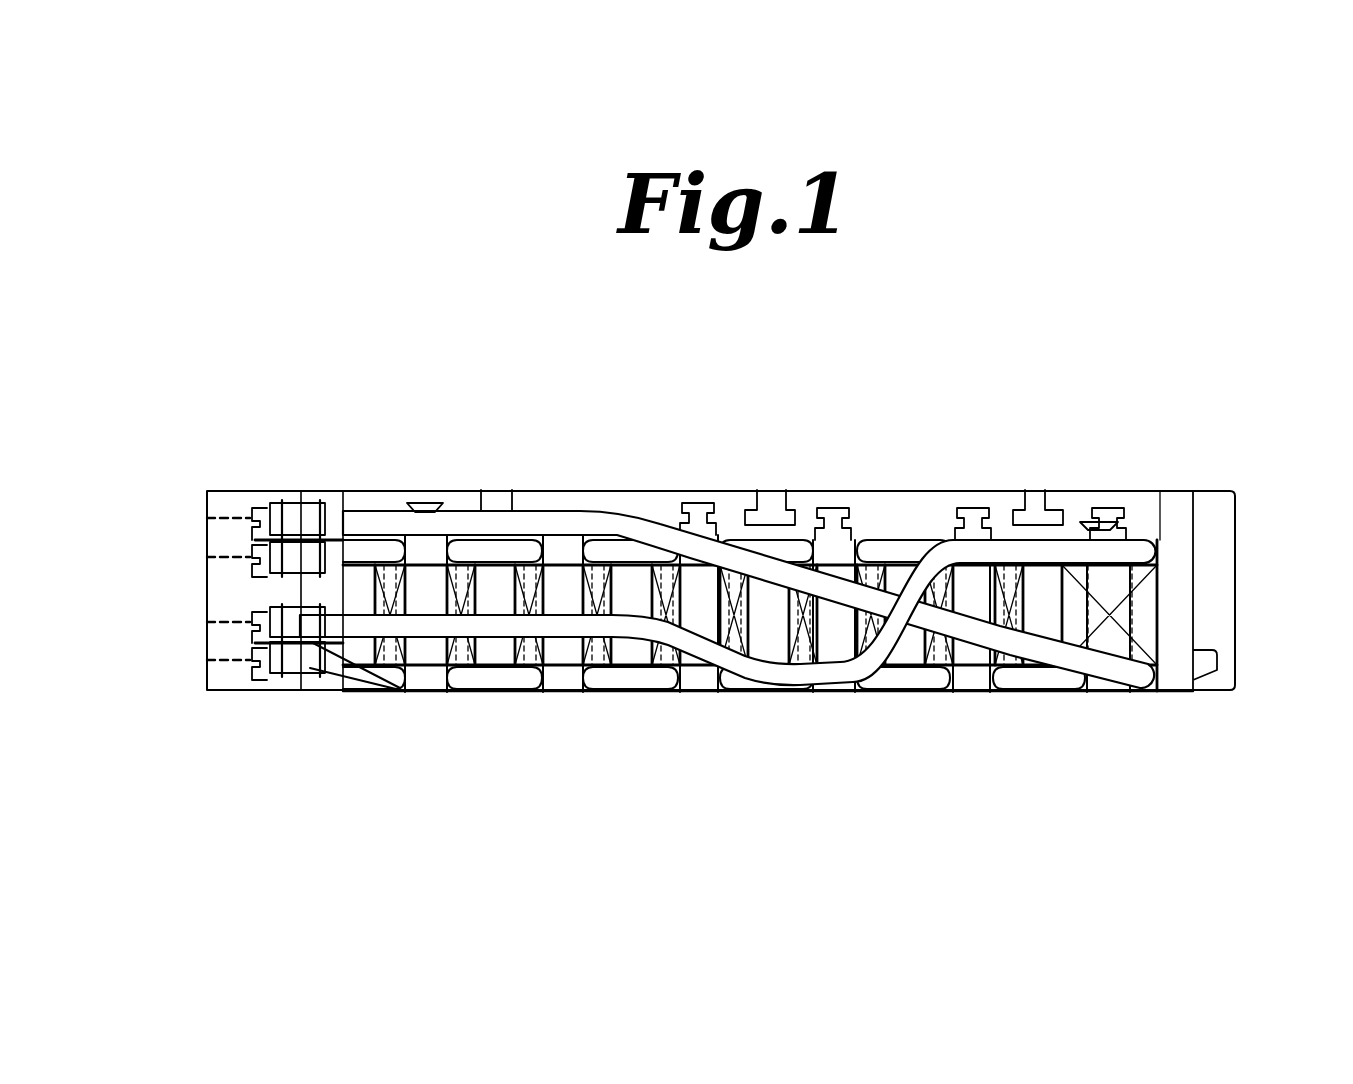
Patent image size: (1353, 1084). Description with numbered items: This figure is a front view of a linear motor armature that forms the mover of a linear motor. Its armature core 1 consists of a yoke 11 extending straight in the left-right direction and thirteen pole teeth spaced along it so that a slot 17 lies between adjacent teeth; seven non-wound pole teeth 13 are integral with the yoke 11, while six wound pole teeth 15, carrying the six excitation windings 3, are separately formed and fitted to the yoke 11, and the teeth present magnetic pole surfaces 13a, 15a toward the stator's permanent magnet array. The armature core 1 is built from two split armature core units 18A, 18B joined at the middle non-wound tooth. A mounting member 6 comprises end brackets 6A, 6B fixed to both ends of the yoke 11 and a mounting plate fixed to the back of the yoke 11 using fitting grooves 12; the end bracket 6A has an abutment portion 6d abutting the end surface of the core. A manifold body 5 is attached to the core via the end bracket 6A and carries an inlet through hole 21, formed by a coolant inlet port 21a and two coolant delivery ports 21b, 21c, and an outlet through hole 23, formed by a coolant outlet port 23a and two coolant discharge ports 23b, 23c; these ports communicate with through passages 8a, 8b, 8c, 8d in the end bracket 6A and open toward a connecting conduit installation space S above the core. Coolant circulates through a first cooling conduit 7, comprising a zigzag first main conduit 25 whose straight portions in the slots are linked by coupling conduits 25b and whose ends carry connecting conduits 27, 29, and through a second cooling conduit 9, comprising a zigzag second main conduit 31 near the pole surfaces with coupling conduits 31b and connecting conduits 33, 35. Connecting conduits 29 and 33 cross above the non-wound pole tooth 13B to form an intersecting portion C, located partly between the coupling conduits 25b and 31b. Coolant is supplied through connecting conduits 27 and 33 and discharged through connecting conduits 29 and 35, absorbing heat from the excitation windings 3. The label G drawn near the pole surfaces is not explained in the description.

The armature core 1 is at (412, 476).
The excitation winding 3 is at (1142, 653).
The manifold body 5 is at (195, 479).
The mounting member 6 is at (1255, 569).
The end bracket 6A is at (322, 498).
The end bracket 6B is at (1232, 525).
The abutment portion 6d is at (348, 525).
The first cooling conduit 7 is at (1176, 530).
The through passage 8a is at (310, 538).
The through passage 8b is at (280, 505).
The through passage 8c is at (273, 608).
The through passage 8d is at (300, 692).
The second cooling conduit 9 is at (1153, 701).
The yoke 11 is at (898, 545).
The fitting groove 12 is at (512, 497).
The non-wound pole tooth 13 is at (360, 597).
The non-wound pole tooth 13B is at (897, 590).
The magnetic pole surface 13a is at (375, 697).
The wound pole tooth 15 is at (430, 590).
The magnetic pole surface 15a is at (420, 693).
The slot 17 is at (1158, 628).
The split armature core unit 18A is at (465, 474).
The split armature core unit 18B is at (1117, 475).
The inlet through hole 21 is at (207, 521).
The coolant inlet port 21a is at (207, 558).
The coolant delivery port 21b is at (268, 508).
The coolant delivery port 21c is at (253, 535).
The outlet through hole 23 is at (207, 661).
The coolant outlet port 23a is at (207, 623).
The coolant discharge port 23b is at (265, 630).
The coolant discharge port 23c is at (268, 672).
The first main conduit 25 is at (929, 543).
The coupling conduit 25b is at (497, 548).
The connecting conduit 27 is at (386, 520).
The connecting conduit 29 is at (807, 690).
The second main conduit 31 is at (735, 706).
The coupling conduit 31b is at (482, 697).
The connecting conduit 33 is at (812, 590).
The connecting conduit 35 is at (330, 692).
The intersecting portion C is at (940, 693).
The gap G is at (907, 690).
The connecting conduit installation space S is at (1180, 619).